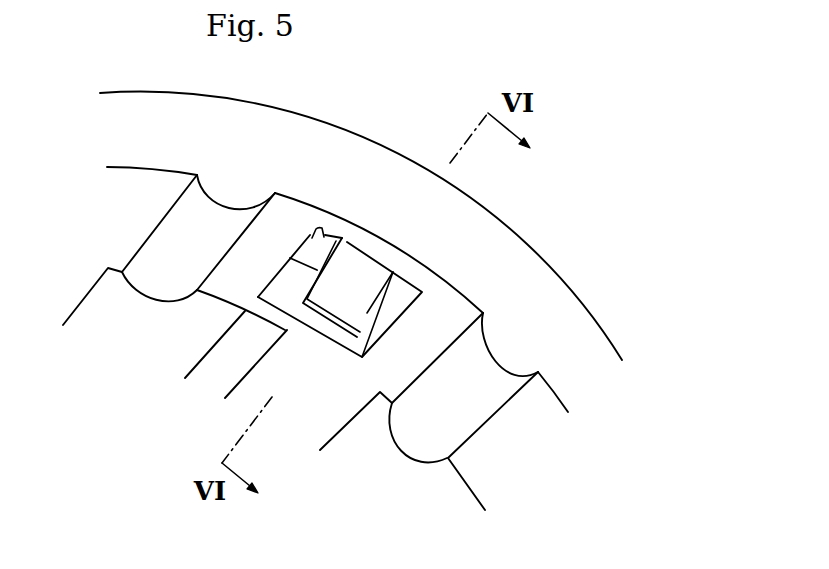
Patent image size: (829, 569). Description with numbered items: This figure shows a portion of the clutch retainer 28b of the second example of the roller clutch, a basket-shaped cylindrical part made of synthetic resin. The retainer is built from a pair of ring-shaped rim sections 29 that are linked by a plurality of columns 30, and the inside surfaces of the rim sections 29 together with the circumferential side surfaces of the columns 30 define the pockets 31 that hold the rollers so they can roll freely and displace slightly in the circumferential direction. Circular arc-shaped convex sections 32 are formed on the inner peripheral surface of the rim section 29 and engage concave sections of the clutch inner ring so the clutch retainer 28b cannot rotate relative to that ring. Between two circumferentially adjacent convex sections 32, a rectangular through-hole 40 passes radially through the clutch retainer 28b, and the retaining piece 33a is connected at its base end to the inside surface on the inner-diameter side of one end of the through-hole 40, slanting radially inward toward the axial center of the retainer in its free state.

The clutch retainer 28b is at (490, 252).
The rim section 29 is at (130, 187).
The column 30 is at (270, 378).
The pocket 31 is at (93, 293).
The convex section 32 is at (212, 213).
The retaining piece 33a is at (340, 305).
The through-hole 40 is at (324, 228).